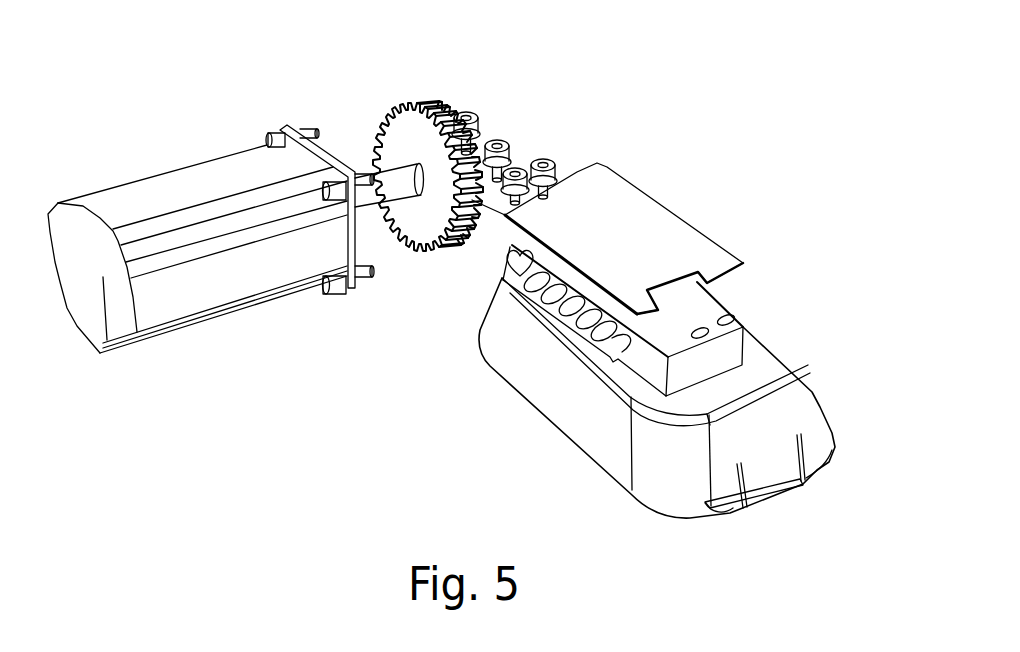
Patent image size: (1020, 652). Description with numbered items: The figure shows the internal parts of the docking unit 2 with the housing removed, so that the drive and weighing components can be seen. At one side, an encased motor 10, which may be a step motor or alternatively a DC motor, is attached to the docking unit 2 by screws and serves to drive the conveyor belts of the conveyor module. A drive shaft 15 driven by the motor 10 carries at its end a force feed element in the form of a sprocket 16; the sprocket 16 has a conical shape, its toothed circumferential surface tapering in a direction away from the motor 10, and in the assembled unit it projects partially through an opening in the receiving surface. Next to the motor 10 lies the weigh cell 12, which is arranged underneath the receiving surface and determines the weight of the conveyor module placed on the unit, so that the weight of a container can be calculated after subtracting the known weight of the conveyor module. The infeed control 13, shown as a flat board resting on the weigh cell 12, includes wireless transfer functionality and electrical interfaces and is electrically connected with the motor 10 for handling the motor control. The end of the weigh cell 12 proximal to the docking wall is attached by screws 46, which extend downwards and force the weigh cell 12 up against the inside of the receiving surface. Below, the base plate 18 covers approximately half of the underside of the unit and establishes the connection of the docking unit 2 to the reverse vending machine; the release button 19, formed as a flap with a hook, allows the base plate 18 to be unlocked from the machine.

The docking unit 2 is at (405, 363).
The motor 10 is at (227, 296).
The weigh cell 12 is at (713, 352).
The infeed control 13 is at (608, 190).
The drive shaft 15 is at (366, 198).
The sprocket 16 is at (402, 122).
The base plate 18 is at (657, 493).
The release button 19 is at (772, 468).
The screws 46 is at (518, 168).